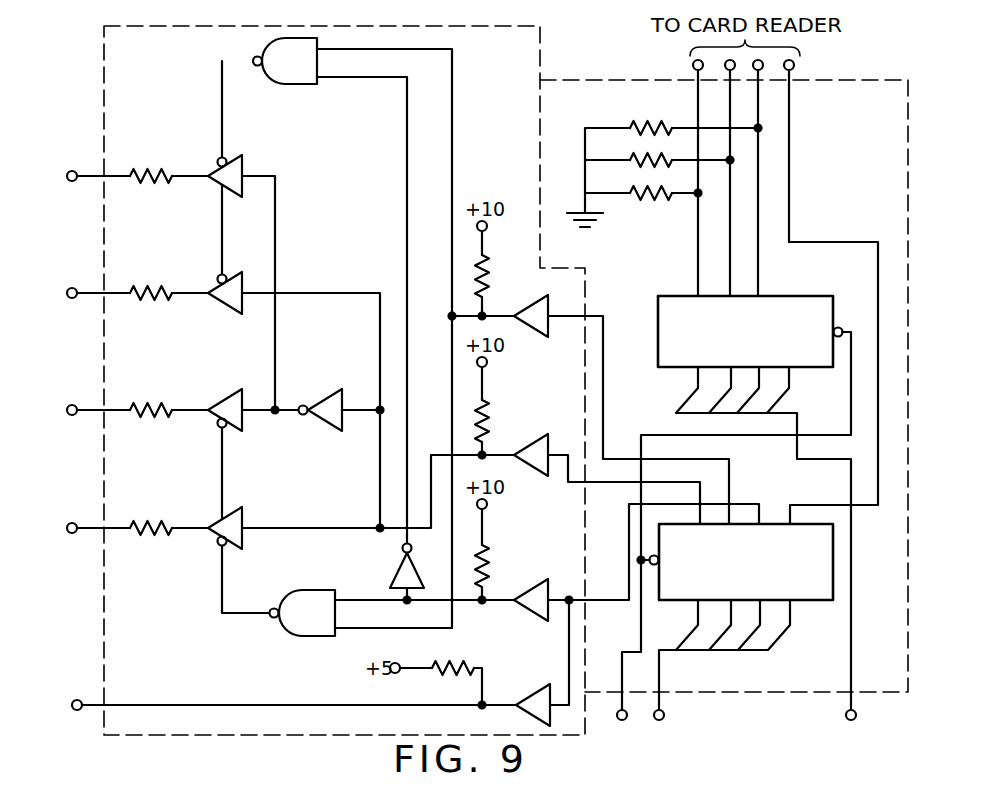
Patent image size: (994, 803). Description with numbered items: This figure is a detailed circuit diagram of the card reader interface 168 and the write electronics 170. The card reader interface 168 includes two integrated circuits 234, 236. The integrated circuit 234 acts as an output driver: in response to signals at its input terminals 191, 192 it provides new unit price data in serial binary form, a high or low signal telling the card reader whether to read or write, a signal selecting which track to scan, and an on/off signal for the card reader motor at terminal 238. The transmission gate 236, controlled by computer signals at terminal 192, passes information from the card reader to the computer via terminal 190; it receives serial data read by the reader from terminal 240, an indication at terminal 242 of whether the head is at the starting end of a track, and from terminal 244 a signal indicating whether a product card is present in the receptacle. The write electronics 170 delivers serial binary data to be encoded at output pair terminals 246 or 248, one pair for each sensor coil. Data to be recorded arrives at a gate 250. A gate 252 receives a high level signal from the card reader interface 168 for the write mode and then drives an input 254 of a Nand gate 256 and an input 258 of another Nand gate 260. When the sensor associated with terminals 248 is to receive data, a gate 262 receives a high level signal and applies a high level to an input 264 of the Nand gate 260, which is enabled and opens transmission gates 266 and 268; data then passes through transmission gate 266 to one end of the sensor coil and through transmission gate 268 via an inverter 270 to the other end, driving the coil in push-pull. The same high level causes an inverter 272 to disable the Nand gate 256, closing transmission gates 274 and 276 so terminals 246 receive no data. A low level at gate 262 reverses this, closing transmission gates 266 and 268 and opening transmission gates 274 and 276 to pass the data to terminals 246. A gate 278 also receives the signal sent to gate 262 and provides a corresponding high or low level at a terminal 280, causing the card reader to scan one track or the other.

The card reader interface 168 is at (877, 216).
The write electronics 170 is at (254, 691).
The terminal 190 is at (846, 716).
The input terminal 191 is at (664, 716).
The input terminal 192 is at (616, 718).
The integrated circuit 234 is at (812, 602).
The integrated circuit 236 is at (678, 295).
The terminal 238 is at (795, 66).
The terminal 240 is at (693, 66).
The terminal 242 is at (727, 70).
The terminal 244 is at (761, 70).
The output pair terminals 246 is at (72, 182).
The output pair terminals 248 is at (76, 522).
The gate 250 is at (532, 442).
The gate 252 is at (526, 306).
The input 254 is at (358, 49).
The Nand gate 256 is at (263, 84).
The input 258 is at (392, 629).
The Nand gate 260 is at (284, 592).
The gate 262 is at (530, 588).
The input 264 is at (360, 599).
The transmission gate 266 is at (238, 505).
The transmission gate 268 is at (231, 431).
The inverter 270 is at (320, 391).
The inverter 272 is at (396, 565).
The transmission gate 274 is at (244, 158).
The transmission gate 276 is at (228, 312).
The gate 278 is at (532, 692).
The terminal 280 is at (76, 700).